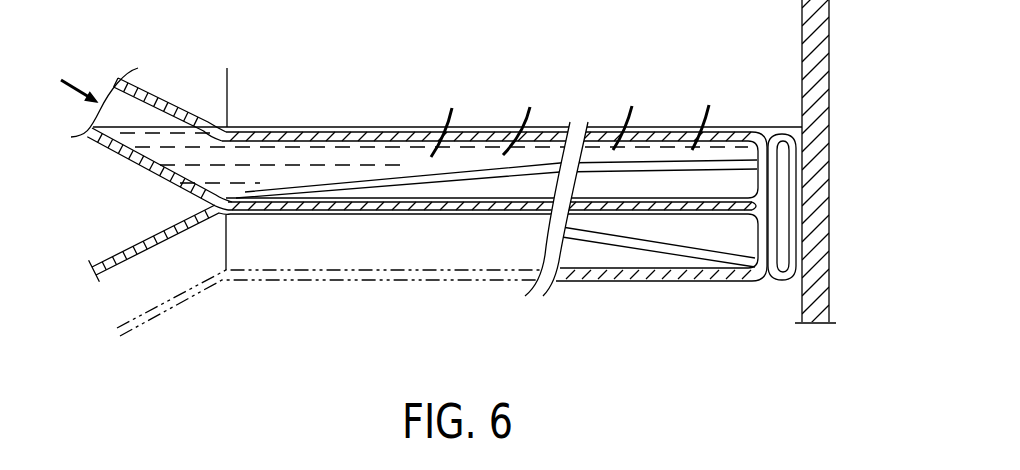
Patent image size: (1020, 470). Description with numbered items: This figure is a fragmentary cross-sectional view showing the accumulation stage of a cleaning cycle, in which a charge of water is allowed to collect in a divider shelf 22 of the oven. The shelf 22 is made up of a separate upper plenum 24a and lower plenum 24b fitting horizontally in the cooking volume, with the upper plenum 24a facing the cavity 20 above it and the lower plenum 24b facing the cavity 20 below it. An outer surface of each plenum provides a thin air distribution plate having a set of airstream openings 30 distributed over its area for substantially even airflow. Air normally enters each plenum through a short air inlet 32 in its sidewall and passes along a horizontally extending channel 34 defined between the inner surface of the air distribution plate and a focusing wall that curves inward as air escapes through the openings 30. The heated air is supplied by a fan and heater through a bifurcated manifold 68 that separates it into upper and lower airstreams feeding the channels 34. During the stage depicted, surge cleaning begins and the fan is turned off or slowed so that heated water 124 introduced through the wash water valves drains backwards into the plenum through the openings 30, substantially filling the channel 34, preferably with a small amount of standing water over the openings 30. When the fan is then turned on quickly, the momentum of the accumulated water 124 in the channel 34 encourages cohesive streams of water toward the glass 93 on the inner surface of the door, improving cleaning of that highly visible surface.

The cavity 20 is at (336, 55).
The shelf 22 is at (730, 124).
The upper plenum 24a is at (737, 180).
The lower plenum 24b is at (735, 238).
The airstream openings 30 is at (412, 159).
The air inlet 32 is at (238, 118).
The channel 34 is at (264, 176).
The bifurcated manifold 68 is at (163, 101).
The glass 93 is at (813, 29).
The water 124 is at (311, 129).